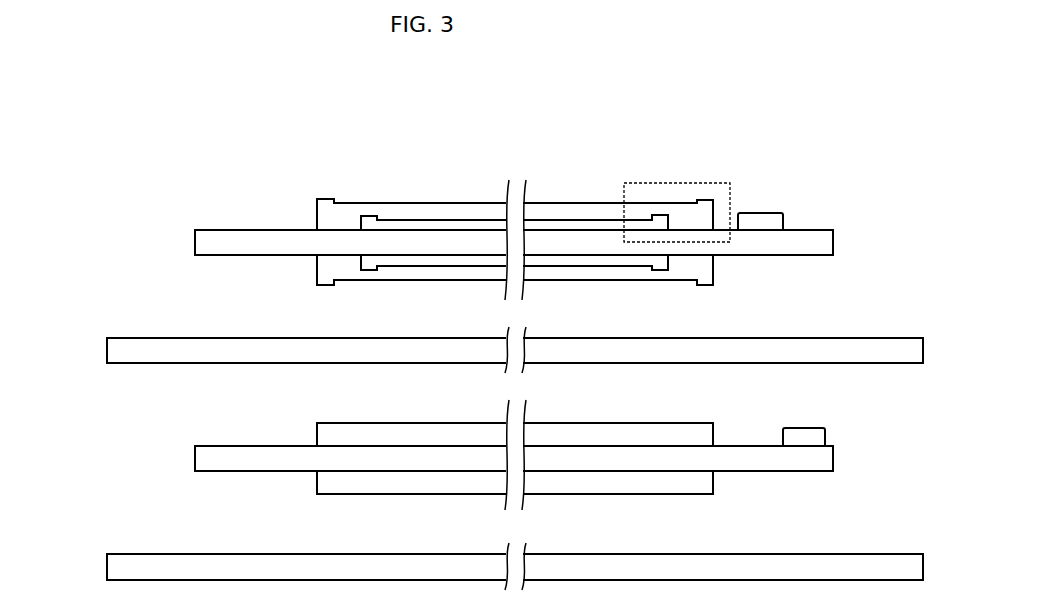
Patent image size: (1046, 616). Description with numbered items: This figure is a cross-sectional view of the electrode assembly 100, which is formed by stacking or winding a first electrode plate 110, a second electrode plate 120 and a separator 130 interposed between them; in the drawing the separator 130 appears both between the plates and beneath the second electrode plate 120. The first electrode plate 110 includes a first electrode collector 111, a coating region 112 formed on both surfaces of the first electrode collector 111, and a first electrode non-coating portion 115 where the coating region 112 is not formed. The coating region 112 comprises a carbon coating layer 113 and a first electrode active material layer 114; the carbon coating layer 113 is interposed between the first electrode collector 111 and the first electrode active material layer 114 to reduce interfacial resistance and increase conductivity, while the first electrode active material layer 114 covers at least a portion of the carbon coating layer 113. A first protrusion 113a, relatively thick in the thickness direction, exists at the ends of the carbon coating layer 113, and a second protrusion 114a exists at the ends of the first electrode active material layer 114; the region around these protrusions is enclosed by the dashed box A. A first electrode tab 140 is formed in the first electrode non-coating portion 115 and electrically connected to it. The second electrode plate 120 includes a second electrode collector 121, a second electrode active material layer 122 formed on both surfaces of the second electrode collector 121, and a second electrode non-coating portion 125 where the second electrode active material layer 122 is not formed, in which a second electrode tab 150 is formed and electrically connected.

The electrode assembly 100 is at (65, 116).
The first electrode plate 110 is at (186, 242).
The first electrode collector 111 is at (834, 243).
The coating region 112 is at (380, 145).
The carbon coating layer 113 is at (462, 216).
The first protrusion 113a is at (662, 216).
The first electrode active material layer 114 is at (396, 210).
The second protrusion 114a is at (703, 201).
The first electrode non-coating portion 115 is at (818, 228).
The second electrode plate 120 is at (186, 458).
The second electrode collector 121 is at (832, 459).
The second electrode active material layer 122 is at (692, 432).
The second electrode non-coating portion 125 is at (765, 443).
The separator 130 is at (99, 350).
The first electrode tab 140 is at (765, 217).
The second electrode tab 150 is at (820, 438).
The region A is at (672, 183).